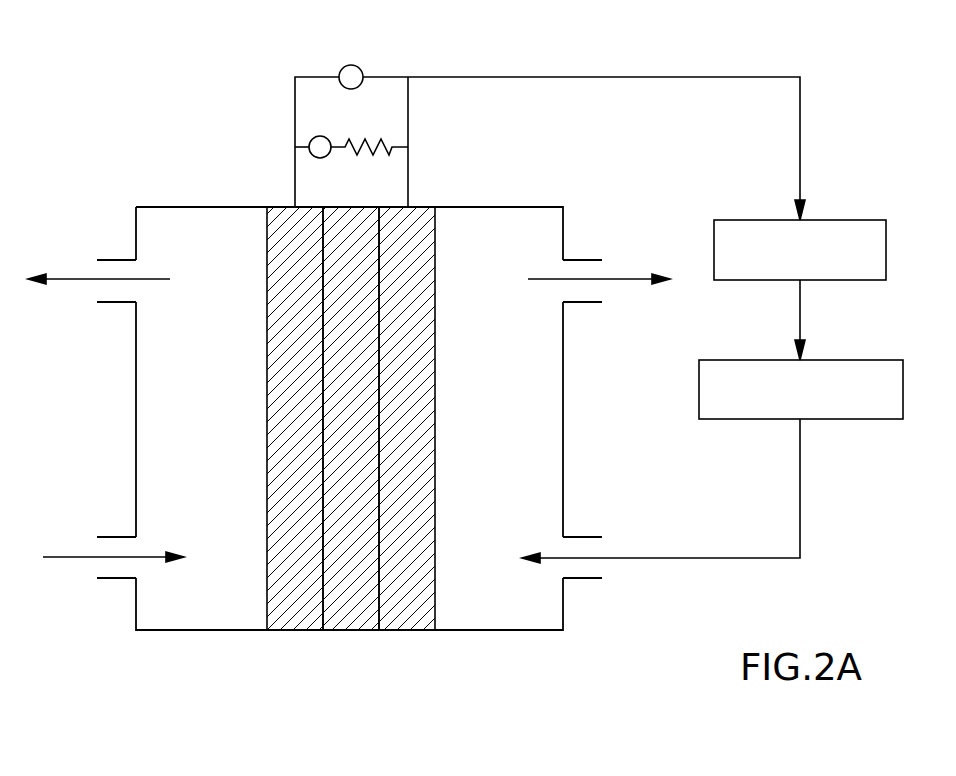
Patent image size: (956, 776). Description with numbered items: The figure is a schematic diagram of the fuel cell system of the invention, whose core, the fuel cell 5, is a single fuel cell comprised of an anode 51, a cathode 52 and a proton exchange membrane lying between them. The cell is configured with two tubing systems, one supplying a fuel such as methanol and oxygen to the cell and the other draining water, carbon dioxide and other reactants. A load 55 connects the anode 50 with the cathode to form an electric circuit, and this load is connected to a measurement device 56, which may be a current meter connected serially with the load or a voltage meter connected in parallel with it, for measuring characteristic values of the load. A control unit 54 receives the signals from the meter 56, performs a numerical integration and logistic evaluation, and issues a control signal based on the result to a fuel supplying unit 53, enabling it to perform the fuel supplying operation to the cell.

The fuel cell 5 is at (146, 197).
The anode 50 is at (295, 617).
The anode 51 is at (402, 618).
The cathode 52 is at (352, 618).
The fuel supplying unit 53 is at (776, 359).
The control unit 54 is at (741, 219).
The load 55 is at (376, 141).
The measurement device 56 is at (343, 68).